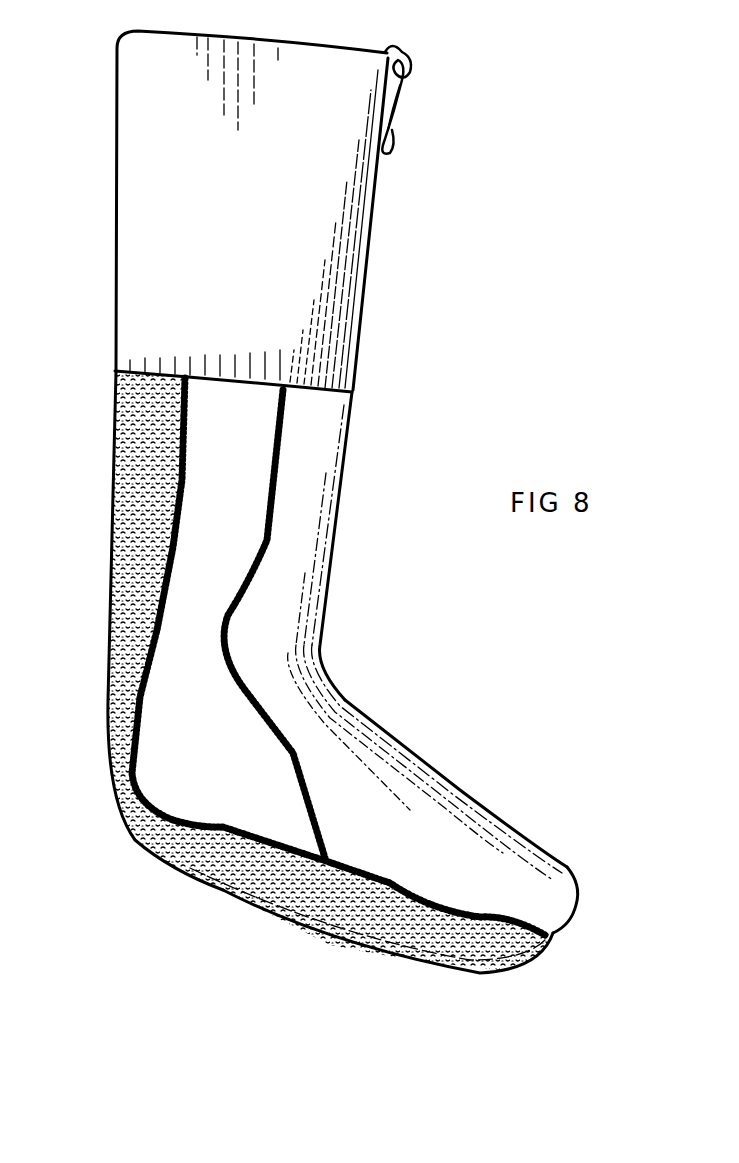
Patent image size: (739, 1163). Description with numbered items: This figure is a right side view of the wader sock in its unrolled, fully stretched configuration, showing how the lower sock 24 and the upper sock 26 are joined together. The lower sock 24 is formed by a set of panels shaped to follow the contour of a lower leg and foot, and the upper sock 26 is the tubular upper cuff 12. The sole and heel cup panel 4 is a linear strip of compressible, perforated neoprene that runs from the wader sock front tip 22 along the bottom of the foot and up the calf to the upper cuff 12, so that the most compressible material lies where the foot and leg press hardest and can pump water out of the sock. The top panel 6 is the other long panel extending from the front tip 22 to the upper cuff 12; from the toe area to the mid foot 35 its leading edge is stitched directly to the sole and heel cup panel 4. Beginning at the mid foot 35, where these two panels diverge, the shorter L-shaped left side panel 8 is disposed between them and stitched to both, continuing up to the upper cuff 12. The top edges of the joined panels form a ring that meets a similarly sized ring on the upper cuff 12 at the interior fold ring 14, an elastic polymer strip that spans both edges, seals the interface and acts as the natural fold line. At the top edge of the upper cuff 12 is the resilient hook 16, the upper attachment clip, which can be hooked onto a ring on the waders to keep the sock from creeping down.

The sole and heel cup panel 4 is at (112, 673).
The top panel 6 is at (320, 473).
The left side panel 8 is at (210, 477).
The upper cuff 12 is at (358, 222).
The interior fold ring 14 is at (350, 395).
The resilient hook 16 is at (392, 130).
The wader sock front tip 22 is at (560, 928).
The lower sock 24 is at (438, 716).
The upper sock 26 is at (400, 293).
The mid foot 35 is at (348, 875).